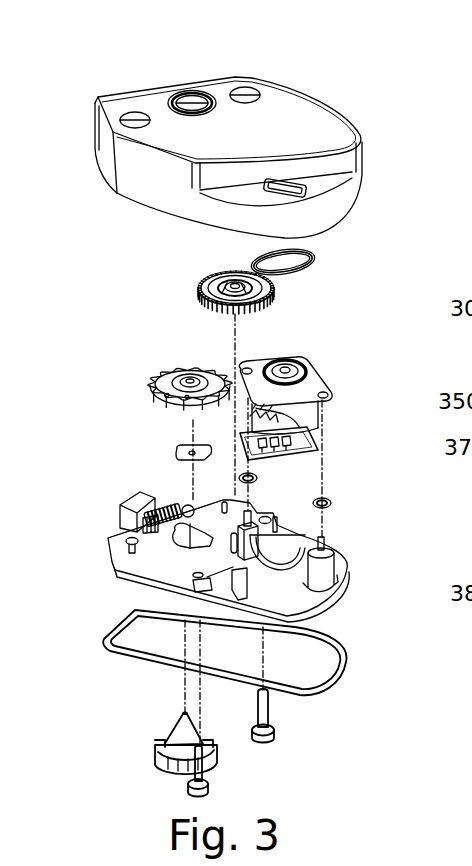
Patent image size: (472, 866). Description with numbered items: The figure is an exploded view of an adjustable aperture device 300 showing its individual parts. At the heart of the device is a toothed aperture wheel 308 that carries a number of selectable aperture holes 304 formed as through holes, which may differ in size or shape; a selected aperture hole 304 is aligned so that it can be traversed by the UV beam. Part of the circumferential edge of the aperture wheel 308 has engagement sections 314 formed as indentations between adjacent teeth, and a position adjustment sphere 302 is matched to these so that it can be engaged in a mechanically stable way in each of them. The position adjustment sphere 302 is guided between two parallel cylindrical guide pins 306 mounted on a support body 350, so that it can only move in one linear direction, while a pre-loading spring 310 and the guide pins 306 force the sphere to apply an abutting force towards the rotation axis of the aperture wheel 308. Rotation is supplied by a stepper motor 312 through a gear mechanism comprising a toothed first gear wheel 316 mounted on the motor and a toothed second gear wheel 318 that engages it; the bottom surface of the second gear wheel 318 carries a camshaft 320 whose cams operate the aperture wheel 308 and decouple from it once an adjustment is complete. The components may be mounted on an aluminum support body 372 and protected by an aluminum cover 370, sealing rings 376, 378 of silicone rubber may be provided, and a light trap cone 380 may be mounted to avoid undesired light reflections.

The adjustable aperture device 300 is at (108, 64).
The cover 370 is at (310, 122).
The ring 376 is at (313, 256).
The second gear wheel 318 is at (207, 274).
The camshaft 320 is at (228, 332).
The engagement sections 314 is at (182, 372).
The aperture wheel 308 is at (167, 364).
The aperture holes 304 is at (215, 370).
The first gear wheel 316 is at (305, 368).
The stepper motor 312 is at (320, 418).
The position adjustment sphere 302 is at (183, 500).
The support body 350 is at (140, 492).
The guide pins 306 is at (126, 523).
The pre-loading spring 310 is at (163, 559).
The support body 372 is at (143, 568).
The ring 378 is at (348, 656).
The light trap cone 380 is at (160, 737).